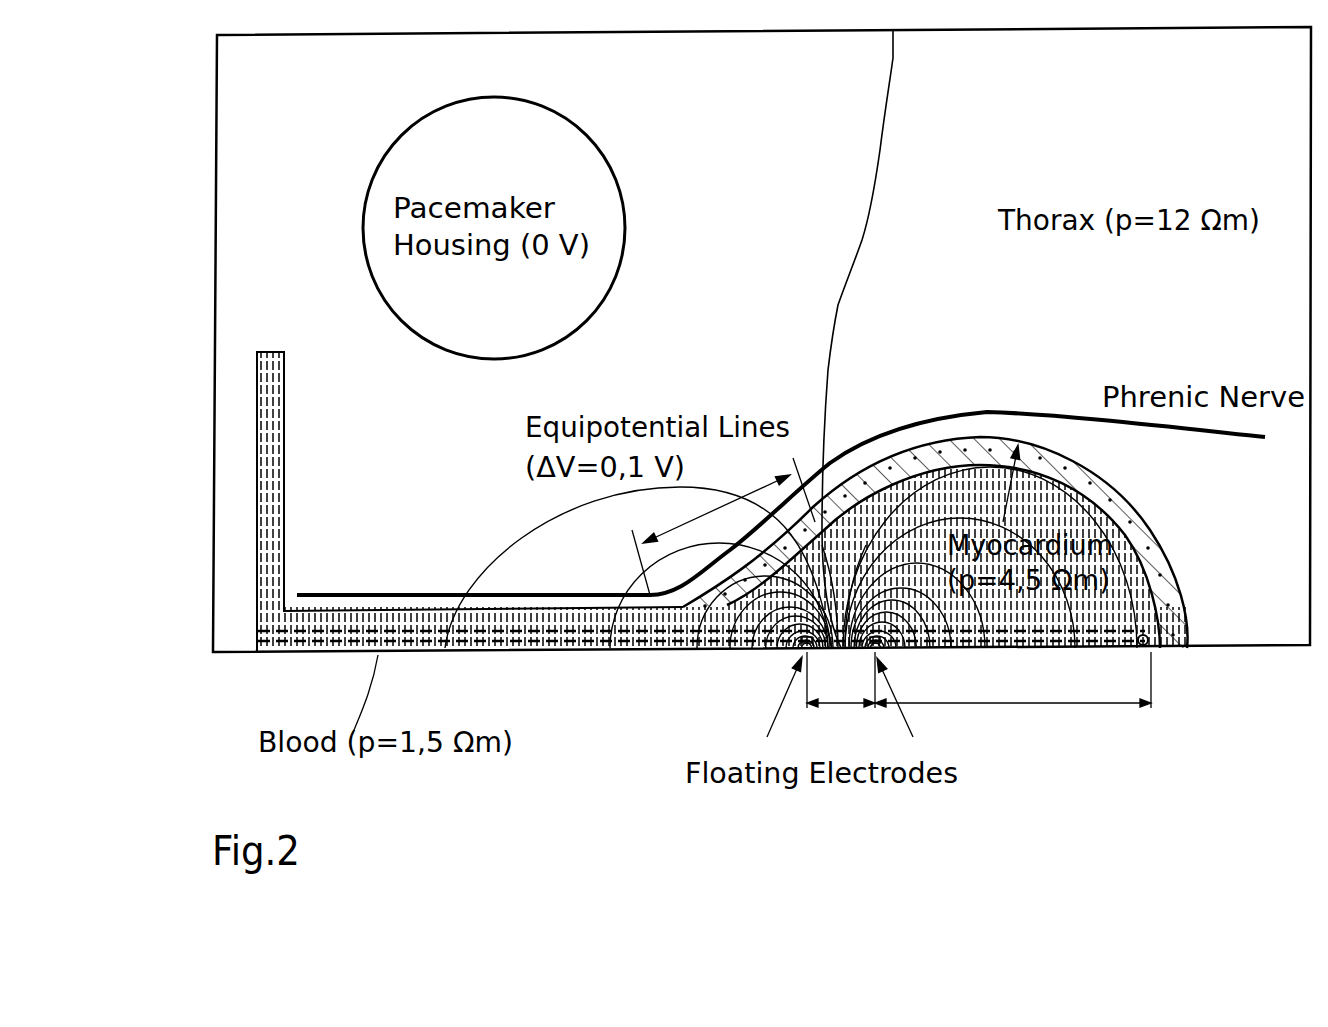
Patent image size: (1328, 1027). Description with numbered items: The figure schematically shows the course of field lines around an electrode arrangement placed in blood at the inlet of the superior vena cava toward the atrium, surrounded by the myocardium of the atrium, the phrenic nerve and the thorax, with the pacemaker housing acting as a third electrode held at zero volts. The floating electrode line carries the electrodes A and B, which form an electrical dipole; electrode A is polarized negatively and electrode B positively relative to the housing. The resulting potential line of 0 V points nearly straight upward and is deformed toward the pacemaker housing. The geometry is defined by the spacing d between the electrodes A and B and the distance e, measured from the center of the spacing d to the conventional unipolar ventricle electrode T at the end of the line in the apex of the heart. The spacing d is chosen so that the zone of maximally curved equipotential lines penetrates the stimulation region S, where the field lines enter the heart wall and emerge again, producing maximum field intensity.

The potential line of 0 V 0 is at (885, 122).
The electrode A is at (781, 672).
The electrode B is at (903, 672).
The ventricle electrode T is at (1138, 671).
The stimulation region S is at (723, 524).
The distance between the electrodes d is at (841, 689).
The distance from the electrodes to the end of the electrode e is at (1013, 689).